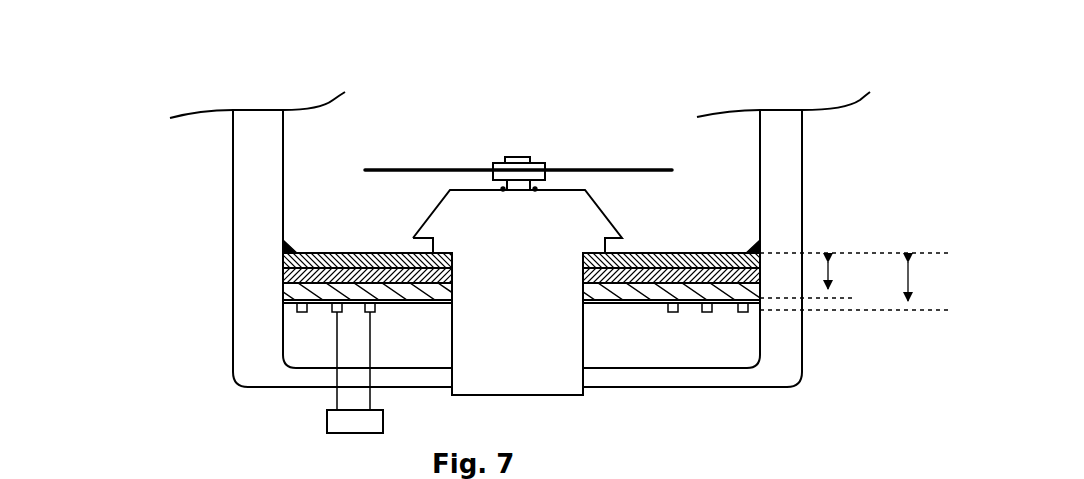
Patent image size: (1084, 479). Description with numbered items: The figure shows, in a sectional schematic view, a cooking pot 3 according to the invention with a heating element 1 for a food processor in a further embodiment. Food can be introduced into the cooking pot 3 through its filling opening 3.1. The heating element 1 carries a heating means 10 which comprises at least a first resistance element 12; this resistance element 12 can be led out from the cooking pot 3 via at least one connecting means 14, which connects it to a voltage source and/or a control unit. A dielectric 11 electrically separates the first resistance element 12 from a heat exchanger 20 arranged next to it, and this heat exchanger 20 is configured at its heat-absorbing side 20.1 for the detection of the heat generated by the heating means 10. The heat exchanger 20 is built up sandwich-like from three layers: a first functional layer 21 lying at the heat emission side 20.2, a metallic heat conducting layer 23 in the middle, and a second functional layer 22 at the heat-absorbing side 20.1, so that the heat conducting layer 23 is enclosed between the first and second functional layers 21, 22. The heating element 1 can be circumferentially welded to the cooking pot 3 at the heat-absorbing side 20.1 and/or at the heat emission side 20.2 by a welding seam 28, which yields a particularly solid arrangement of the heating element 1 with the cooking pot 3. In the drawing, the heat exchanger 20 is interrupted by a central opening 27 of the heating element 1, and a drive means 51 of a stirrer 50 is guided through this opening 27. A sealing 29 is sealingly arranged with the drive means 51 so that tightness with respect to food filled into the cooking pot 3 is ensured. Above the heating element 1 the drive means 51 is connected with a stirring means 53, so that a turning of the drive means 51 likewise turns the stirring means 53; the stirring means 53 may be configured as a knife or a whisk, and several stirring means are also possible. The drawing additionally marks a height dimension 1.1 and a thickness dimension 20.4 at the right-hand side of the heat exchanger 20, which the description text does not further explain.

The heating element 1 is at (350, 235).
The installation height 1.1 is at (915, 290).
The cooking pot 3 is at (802, 123).
The filling opening 3.1 is at (655, 128).
The heating means 10 is at (721, 336).
The dielectric 11 is at (313, 301).
The first resistance element 12 is at (302, 313).
The connecting means 14 is at (312, 421).
The heat exchanger 20 is at (775, 287).
The heat-absorbing side 20.1 is at (630, 308).
The heat emission side 20.2 is at (666, 256).
The circuit board thickness 20.4 is at (831, 275).
The first functional layer 21 is at (283, 258).
The second functional layer 22 is at (283, 290).
The heat conducting layer 23 is at (283, 280).
The opening 27 is at (442, 326).
The welding seam 28 is at (762, 248).
The sealing 29 is at (532, 192).
The stirrer 50 is at (532, 156).
The drive means 51 is at (560, 355).
The stirring means 53 is at (440, 168).